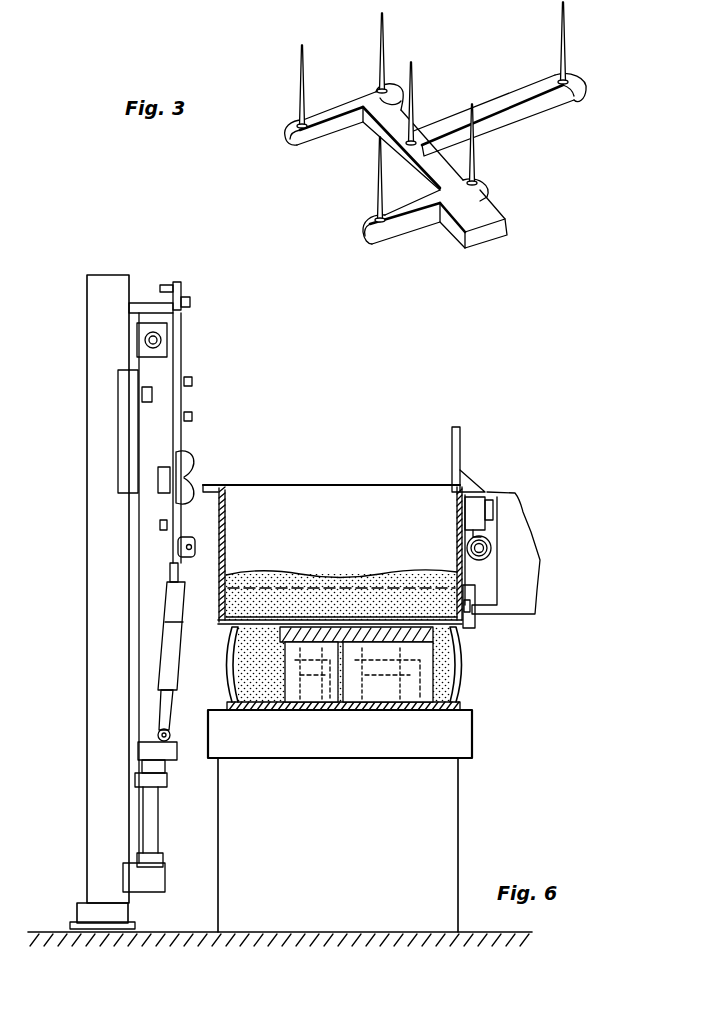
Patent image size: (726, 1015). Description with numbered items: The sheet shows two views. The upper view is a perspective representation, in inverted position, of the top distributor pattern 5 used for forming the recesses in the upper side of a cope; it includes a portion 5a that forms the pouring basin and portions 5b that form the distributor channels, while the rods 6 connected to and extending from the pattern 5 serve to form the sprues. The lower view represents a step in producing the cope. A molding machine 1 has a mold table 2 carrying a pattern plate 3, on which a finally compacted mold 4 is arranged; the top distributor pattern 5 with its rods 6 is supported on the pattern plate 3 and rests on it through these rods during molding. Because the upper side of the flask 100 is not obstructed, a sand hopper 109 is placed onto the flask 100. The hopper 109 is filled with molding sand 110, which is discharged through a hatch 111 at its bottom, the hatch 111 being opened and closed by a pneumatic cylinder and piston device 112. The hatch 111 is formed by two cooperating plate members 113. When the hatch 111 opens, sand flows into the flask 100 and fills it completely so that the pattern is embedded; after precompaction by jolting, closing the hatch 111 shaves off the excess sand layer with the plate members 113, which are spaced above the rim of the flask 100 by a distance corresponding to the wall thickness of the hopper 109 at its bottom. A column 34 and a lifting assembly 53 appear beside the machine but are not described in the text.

In FIG. 6, the molding machine 1 is at (472, 753).
In FIG. 6, the mold table 2 is at (467, 730).
In FIG. 6, the pattern plate 3 is at (462, 707).
In FIG. 6, the finally compacted mold 4 is at (253, 640).
In FIG. 3, the top distributor pattern 5 is at (370, 137).
In FIG. 6, the top distributor pattern 5 is at (390, 620).
In FIG. 3, the pouring basin portion 5a is at (483, 248).
In FIG. 3, the distributor channel portions 5b is at (512, 132).
In FIG. 3, the rods 6 is at (560, 42).
In FIG. 6, the rods 6 is at (288, 648).
In FIG. 6, the column 34 is at (100, 802).
In FIG. 6, the lifting rod assembly 53 is at (172, 545).
In FIG. 6, the flask 100 is at (467, 672).
In FIG. 6, the sand hopper 109 is at (282, 492).
In FIG. 6, the molding sand 110 is at (249, 612).
In FIG. 6, the hatch 111 is at (430, 620).
In FIG. 6, the pneumatic cylinder and piston device 112 is at (488, 540).
In FIG. 6, the plate members 113 is at (332, 587).